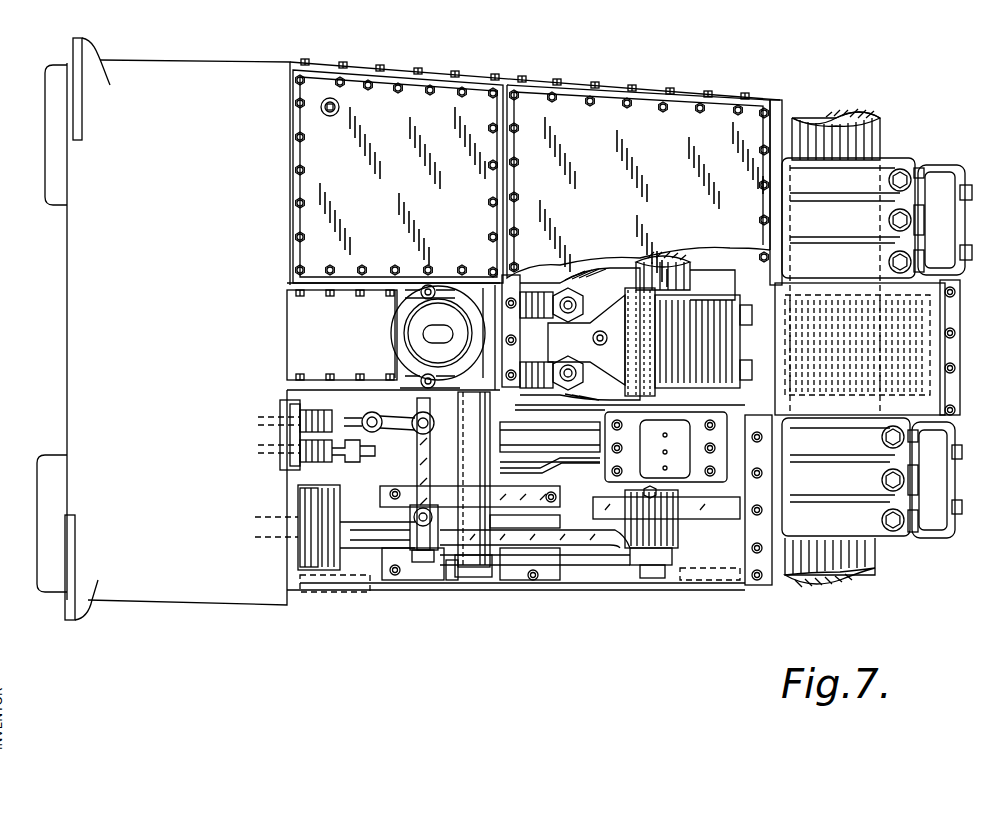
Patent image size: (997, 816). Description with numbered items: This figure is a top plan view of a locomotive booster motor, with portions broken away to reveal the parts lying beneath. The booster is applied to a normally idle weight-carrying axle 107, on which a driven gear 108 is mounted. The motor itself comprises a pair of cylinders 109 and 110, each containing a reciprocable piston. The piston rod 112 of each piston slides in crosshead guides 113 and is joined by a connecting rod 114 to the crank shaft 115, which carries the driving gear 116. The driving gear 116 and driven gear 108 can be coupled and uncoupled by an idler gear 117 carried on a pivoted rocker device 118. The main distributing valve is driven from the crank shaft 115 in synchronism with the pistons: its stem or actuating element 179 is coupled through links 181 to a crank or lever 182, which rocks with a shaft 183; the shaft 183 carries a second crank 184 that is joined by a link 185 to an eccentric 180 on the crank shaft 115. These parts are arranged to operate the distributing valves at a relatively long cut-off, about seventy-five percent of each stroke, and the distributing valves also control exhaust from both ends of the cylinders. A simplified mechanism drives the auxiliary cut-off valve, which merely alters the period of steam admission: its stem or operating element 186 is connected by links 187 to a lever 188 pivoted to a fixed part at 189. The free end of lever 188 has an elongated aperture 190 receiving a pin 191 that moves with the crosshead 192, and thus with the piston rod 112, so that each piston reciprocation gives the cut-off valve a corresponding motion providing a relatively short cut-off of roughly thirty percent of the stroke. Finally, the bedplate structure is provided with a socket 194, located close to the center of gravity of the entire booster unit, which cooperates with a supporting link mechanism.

The axle 107 is at (852, 122).
The driven gear 108 is at (942, 398).
The cylinder 109 is at (64, 63).
The cylinder 110 is at (48, 455).
The piston rod 112 is at (268, 540).
The crosshead guides 113 is at (450, 580).
The connecting rod 114 is at (600, 548).
The crank shaft 115 is at (698, 272).
The driving gear 116 is at (625, 268).
The idler gear 117 is at (710, 300).
The rocker device 118 is at (665, 264).
The stem or actuating element 179 is at (268, 455).
The eccentric 180 is at (672, 562).
The links 181 is at (440, 474).
The crank or lever 182 is at (560, 432).
The shaft 183 is at (492, 405).
The second crank 184 is at (487, 560).
The link 185 is at (584, 570).
The stem or operating element 186 is at (350, 412).
The links 187 is at (395, 415).
The lever 188 is at (405, 482).
The pivot 189 is at (418, 376).
The elongated aperture 190 is at (420, 580).
The pin 191 is at (405, 542).
The crosshead 192 is at (468, 582).
The socket 194 is at (460, 300).